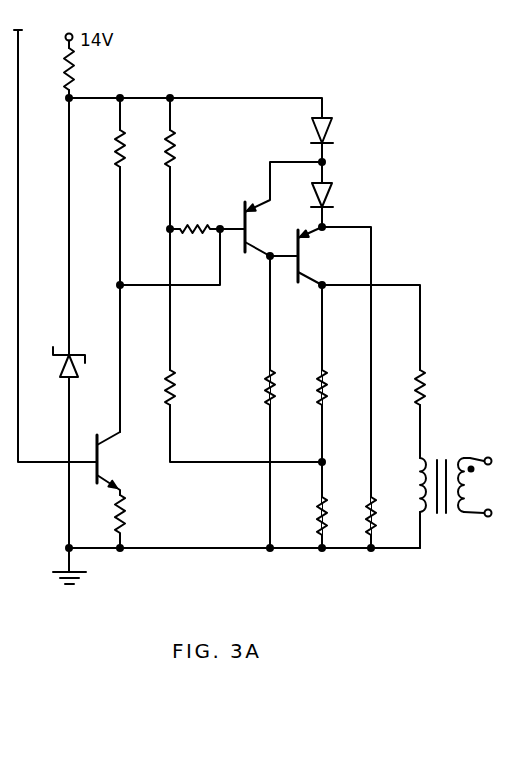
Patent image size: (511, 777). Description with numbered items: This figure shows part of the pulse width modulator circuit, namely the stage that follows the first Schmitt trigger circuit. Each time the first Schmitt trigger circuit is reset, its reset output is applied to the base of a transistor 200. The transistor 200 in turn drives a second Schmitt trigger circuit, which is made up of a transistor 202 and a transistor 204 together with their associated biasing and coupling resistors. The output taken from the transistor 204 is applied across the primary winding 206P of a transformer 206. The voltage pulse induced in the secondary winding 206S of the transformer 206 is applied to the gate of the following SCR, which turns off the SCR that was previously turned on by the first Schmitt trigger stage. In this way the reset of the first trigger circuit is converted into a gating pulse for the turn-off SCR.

The transistor 200 is at (100, 469).
The transistor 202 is at (248, 238).
The transistor 204 is at (301, 262).
The transformer 206 is at (459, 453).
The primary winding 206P is at (427, 456).
The secondary winding 206S is at (456, 462).